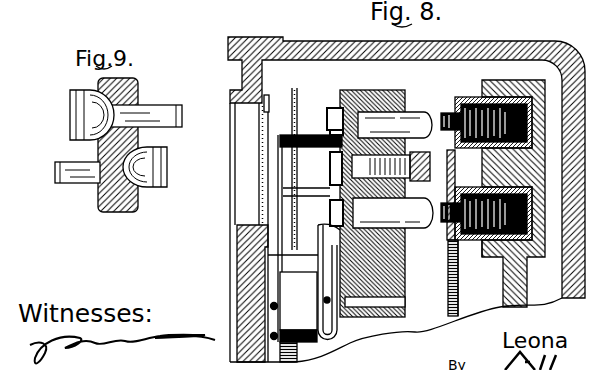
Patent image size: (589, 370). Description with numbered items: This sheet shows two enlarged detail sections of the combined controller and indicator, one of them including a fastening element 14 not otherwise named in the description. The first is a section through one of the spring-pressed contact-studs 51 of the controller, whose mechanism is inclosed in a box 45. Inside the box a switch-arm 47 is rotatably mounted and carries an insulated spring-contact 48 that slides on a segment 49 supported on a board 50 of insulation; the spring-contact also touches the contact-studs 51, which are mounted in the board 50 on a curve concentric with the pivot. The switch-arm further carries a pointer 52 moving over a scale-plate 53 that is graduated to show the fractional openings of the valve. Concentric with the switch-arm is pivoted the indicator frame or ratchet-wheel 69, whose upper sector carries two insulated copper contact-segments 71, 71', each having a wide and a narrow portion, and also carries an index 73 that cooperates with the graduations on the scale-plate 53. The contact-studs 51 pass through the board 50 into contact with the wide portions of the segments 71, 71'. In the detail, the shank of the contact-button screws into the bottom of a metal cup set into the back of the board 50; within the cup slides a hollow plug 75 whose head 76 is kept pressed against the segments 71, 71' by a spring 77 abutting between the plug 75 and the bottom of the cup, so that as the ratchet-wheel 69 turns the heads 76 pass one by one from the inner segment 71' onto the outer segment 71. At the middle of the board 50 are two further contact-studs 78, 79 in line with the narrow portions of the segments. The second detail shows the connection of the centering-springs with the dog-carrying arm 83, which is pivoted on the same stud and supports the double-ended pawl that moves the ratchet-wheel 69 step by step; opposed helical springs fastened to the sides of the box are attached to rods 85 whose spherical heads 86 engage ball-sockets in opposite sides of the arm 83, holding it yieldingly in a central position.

In FIG. 8, the screw 14 is at (406, 158).
In FIG. 8, the box 45 is at (522, 49).
In FIG. 8, the switch-arm 47 is at (290, 305).
In FIG. 8, the spring-contact 48 is at (318, 270).
In FIG. 8, the segment 49 is at (338, 254).
In FIG. 8, the board 50 is at (406, 285).
In FIG. 8, the contact-studs 51 is at (330, 166).
In FIG. 8, the pointer 52 is at (240, 234).
In FIG. 8, the scale-plate 53 is at (278, 193).
In FIG. 8, the ratchet-wheel 69 is at (515, 193).
In FIG. 8, the contact-segment 71 is at (479, 161).
In FIG. 8, the contact-segment 71' is at (439, 278).
In FIG. 8, the index 73 is at (278, 160).
In FIG. 8, the hollow plugs 75 is at (438, 195).
In FIG. 8, the heads 76 is at (432, 162).
In FIG. 8, the springs 77 is at (387, 135).
In FIG. 8, the contact-stud 78 is at (404, 120).
In FIG. 8, the contact-stud 79 is at (381, 213).
In FIG. 9, the arm 83 is at (110, 200).
In FIG. 9, the rods 85 is at (160, 116).
In FIG. 9, the spherical heads 86 is at (93, 110).